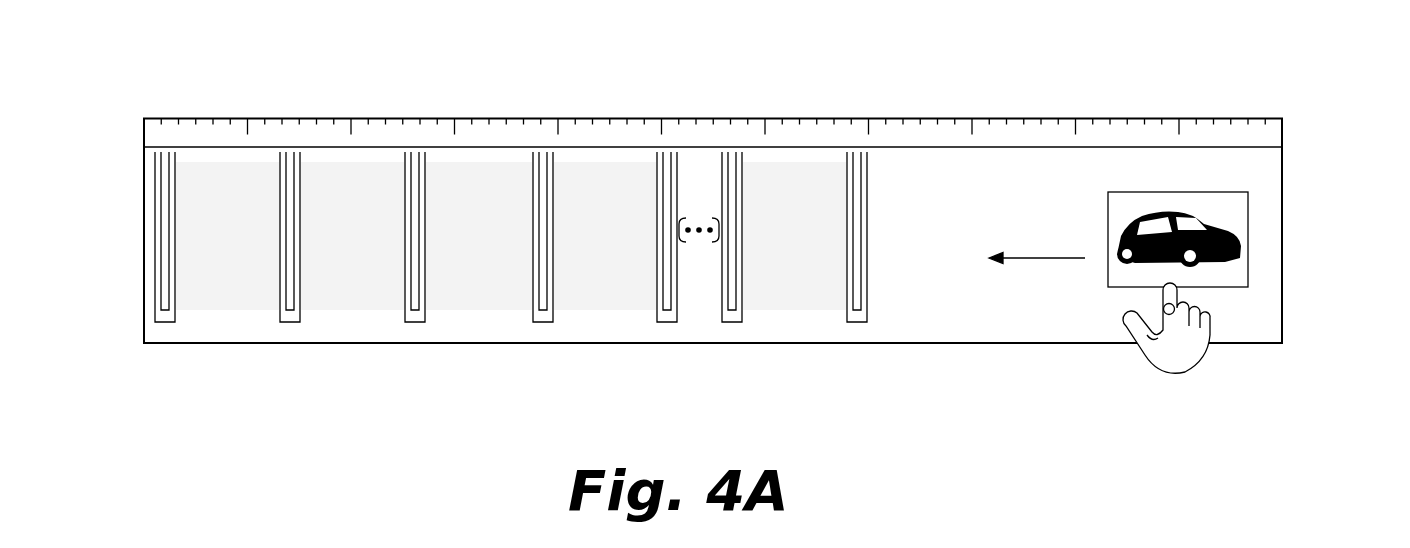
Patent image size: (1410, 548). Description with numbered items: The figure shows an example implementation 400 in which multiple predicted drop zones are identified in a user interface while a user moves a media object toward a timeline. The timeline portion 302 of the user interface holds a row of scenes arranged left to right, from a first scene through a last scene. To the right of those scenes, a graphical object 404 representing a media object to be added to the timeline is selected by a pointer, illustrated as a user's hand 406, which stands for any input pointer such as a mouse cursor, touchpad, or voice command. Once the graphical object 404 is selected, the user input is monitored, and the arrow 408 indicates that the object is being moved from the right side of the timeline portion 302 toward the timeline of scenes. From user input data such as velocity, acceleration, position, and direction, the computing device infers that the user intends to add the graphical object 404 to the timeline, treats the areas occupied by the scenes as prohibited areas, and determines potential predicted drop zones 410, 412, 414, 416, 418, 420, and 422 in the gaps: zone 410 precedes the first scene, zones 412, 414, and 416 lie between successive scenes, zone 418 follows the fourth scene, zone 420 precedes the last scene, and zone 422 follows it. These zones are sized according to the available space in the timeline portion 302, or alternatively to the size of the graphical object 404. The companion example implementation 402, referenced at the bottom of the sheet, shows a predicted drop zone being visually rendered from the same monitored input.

The example implementation 400 is at (141, 78).
The timeline portion 302 is at (144, 252).
The potential drop zone 410 is at (172, 155).
The potential drop zone 412 is at (297, 155).
The potential drop zone 414 is at (422, 155).
The potential drop zone 416 is at (550, 155).
The potential drop zone 418 is at (662, 155).
The potential drop zone 420 is at (738, 155).
The potential drop zone 422 is at (865, 155).
The graphical object 404 is at (1248, 222).
The user's hand 406 is at (1168, 372).
The arrow 408 is at (1023, 260).
The example implementation 402 is at (135, 547).